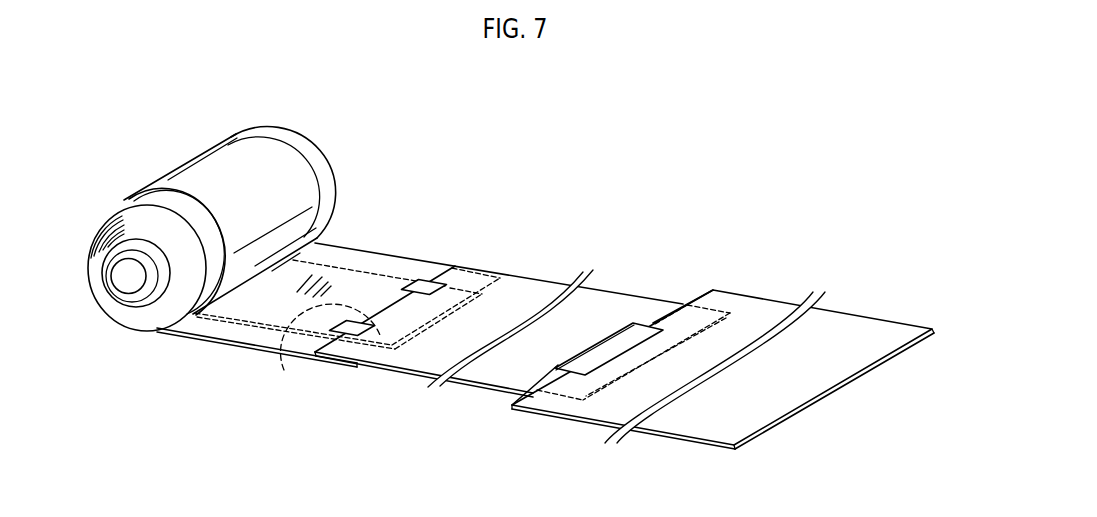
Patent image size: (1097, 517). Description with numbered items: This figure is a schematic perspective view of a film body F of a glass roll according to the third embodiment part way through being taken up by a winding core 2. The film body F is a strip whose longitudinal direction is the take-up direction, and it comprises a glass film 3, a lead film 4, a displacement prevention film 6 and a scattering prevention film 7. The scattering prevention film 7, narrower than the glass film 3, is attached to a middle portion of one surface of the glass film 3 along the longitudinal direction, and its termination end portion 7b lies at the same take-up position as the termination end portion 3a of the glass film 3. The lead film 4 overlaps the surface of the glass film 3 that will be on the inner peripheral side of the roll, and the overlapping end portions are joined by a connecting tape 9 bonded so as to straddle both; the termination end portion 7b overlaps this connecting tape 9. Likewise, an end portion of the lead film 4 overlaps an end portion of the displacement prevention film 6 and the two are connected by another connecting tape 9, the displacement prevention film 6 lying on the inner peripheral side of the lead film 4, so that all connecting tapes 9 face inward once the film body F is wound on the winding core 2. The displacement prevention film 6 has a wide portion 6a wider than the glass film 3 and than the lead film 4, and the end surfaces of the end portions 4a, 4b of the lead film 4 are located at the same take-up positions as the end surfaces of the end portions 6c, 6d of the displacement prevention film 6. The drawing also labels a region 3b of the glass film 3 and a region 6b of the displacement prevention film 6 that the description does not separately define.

The winding core 2 is at (152, 245).
The scattering prevention film 7 is at (261, 157).
The termination end portion of scattering prevention film 7b is at (325, 355).
The glass film 3 is at (400, 268).
The termination end portion of glass film 3a is at (380, 290).
The edge portion of first film 3b is at (338, 257).
The film body F is at (232, 352).
The connecting tape 9 is at (423, 286).
The lead film 4 is at (605, 313).
The end portion of lead film 4a is at (403, 302).
The end portion of lead film 4b is at (540, 376).
The displacement prevention film 6 is at (727, 341).
The wide portion 6a is at (882, 341).
The substrate intermediate portion 6b is at (838, 328).
The end portion of displacement prevention film 6c is at (707, 297).
The end portion of displacement prevention film 6d is at (800, 394).